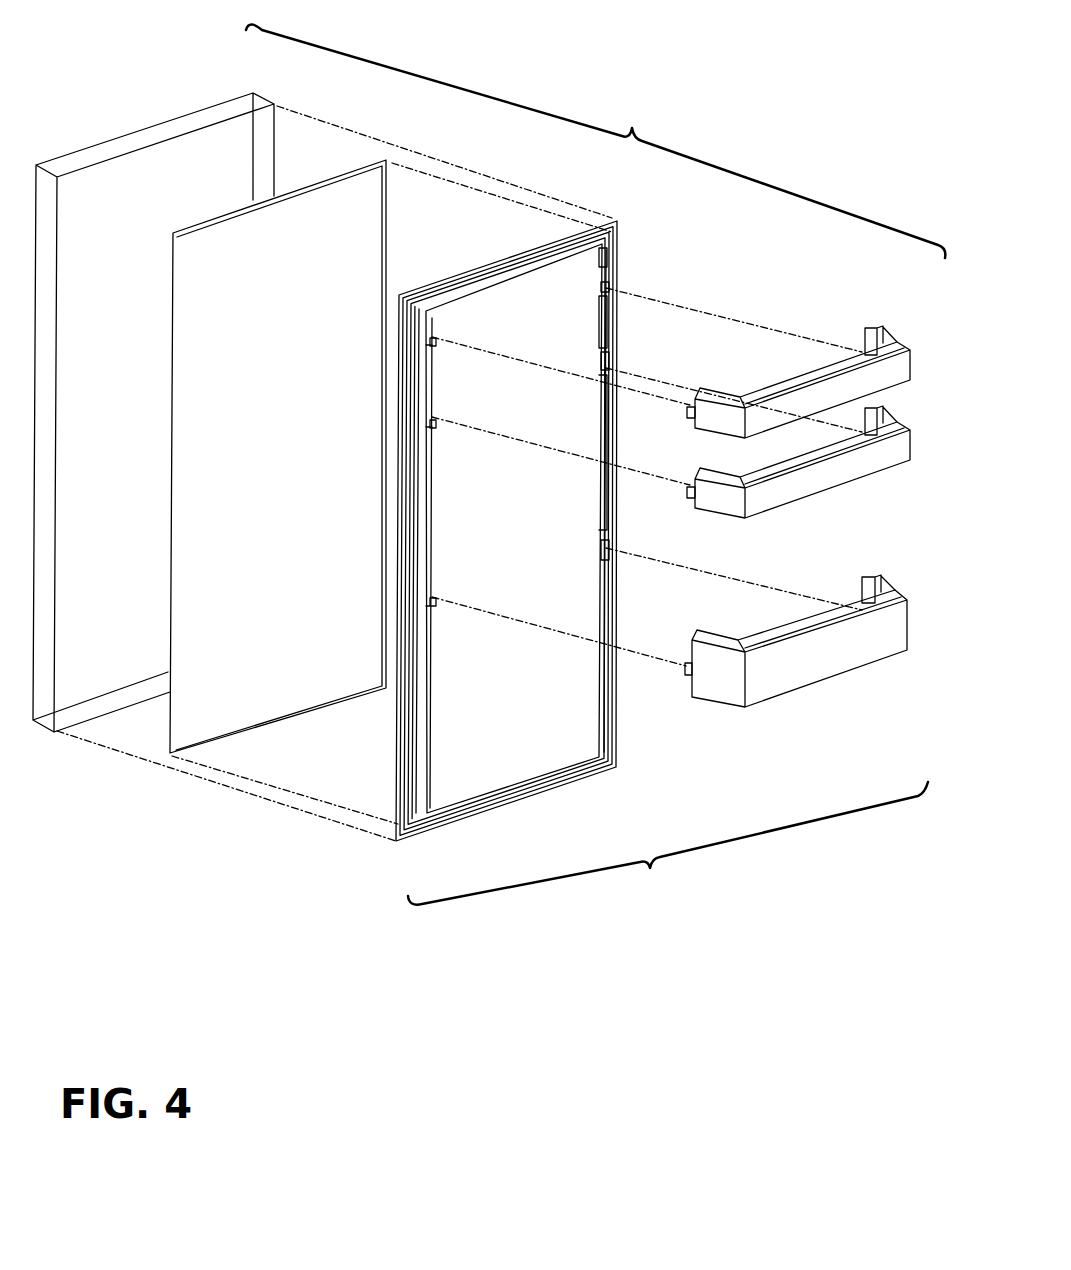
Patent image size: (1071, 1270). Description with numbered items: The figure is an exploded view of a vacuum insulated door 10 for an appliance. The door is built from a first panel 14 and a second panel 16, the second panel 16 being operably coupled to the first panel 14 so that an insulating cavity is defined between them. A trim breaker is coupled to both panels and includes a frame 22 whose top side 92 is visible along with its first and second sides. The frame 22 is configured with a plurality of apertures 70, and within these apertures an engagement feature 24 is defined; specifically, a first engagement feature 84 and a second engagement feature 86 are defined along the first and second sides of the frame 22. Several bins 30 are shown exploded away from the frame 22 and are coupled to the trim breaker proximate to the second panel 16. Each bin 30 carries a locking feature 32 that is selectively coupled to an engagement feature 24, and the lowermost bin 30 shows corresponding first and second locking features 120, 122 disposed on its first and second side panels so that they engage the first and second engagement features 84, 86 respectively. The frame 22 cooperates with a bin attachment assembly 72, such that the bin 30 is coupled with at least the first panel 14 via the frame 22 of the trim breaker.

The vacuum insulated door 10 is at (595, 142).
The first panel 14 is at (339, 202).
The second panel 16 is at (163, 125).
The frame 22 is at (520, 263).
The engagement feature 24 is at (613, 350).
The bin 30 is at (902, 368).
The locking feature 32 is at (687, 410).
The apertures 70 is at (575, 245).
The bin attachment assembly 72 is at (668, 843).
The first engagement feature 84 is at (428, 603).
The second engagement feature 86 is at (614, 548).
The top side 92 is at (477, 290).
The first locking feature 120 is at (685, 673).
The second locking feature 122 is at (890, 582).